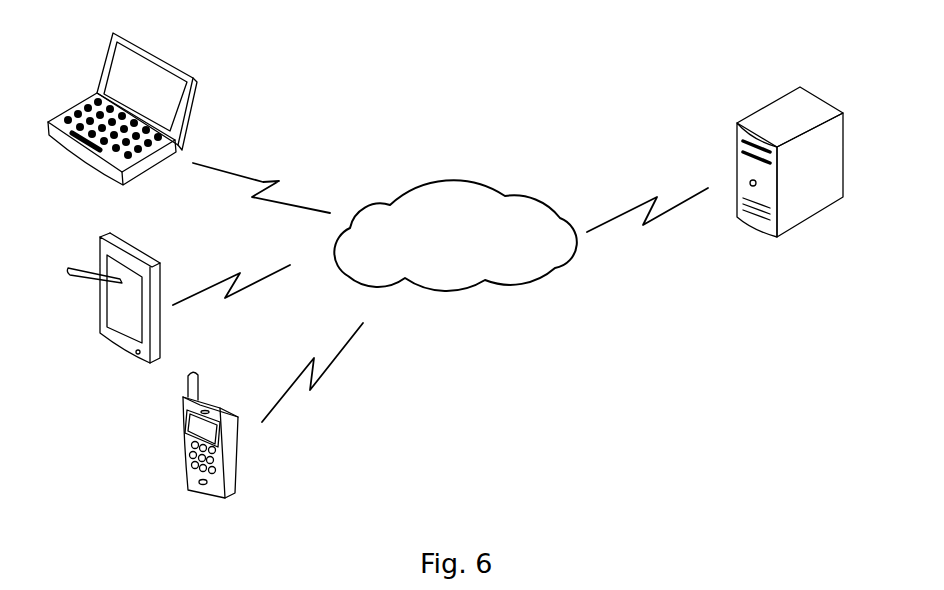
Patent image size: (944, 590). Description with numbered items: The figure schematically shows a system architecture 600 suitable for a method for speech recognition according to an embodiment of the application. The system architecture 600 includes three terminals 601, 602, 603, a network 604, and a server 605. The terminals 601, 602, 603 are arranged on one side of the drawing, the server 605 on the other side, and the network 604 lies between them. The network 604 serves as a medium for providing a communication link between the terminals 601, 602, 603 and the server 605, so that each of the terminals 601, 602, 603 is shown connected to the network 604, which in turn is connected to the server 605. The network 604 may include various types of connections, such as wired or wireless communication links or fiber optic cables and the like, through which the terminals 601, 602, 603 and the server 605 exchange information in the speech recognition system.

The system architecture 600 is at (487, 40).
The terminal 601 is at (187, 443).
The terminal 602 is at (111, 305).
The terminal 603 is at (122, 117).
The network 604 is at (455, 235).
The server 605 is at (790, 184).